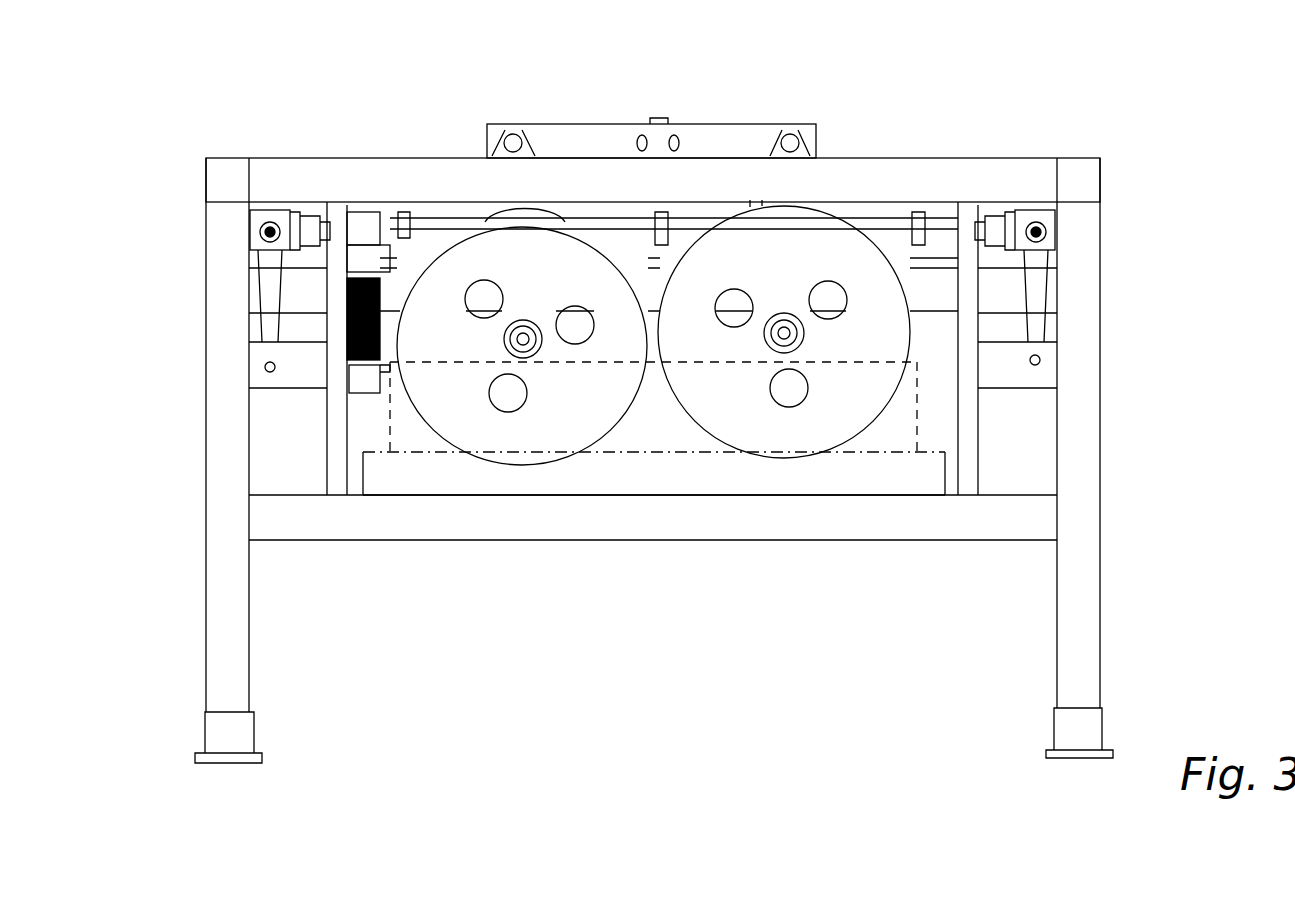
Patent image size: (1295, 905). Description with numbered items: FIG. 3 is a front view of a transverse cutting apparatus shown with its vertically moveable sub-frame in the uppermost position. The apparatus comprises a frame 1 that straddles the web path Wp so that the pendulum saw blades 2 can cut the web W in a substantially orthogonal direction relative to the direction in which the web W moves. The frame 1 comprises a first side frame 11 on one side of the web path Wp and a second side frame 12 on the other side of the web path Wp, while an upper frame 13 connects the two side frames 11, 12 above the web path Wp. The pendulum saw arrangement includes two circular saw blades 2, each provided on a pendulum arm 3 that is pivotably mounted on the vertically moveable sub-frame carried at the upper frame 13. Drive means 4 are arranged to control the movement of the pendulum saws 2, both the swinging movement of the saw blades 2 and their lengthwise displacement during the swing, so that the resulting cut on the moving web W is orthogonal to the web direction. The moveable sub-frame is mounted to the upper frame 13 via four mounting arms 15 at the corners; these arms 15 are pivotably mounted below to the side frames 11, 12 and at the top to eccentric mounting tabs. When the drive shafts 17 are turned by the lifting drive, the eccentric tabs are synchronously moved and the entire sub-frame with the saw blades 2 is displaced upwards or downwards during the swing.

The frame 1 is at (1176, 186).
The pendulum saw blades 2 is at (585, 420).
The pendulum arm 3 is at (495, 212).
The drive means 4 is at (733, 106).
The first side frame 11 is at (1085, 447).
The second side frame 12 is at (215, 441).
The upper frame 13 is at (930, 170).
The mounting arms 15 is at (270, 276).
The drive shafts 17 is at (880, 218).
The web W is at (413, 497).
The web path Wp is at (385, 480).